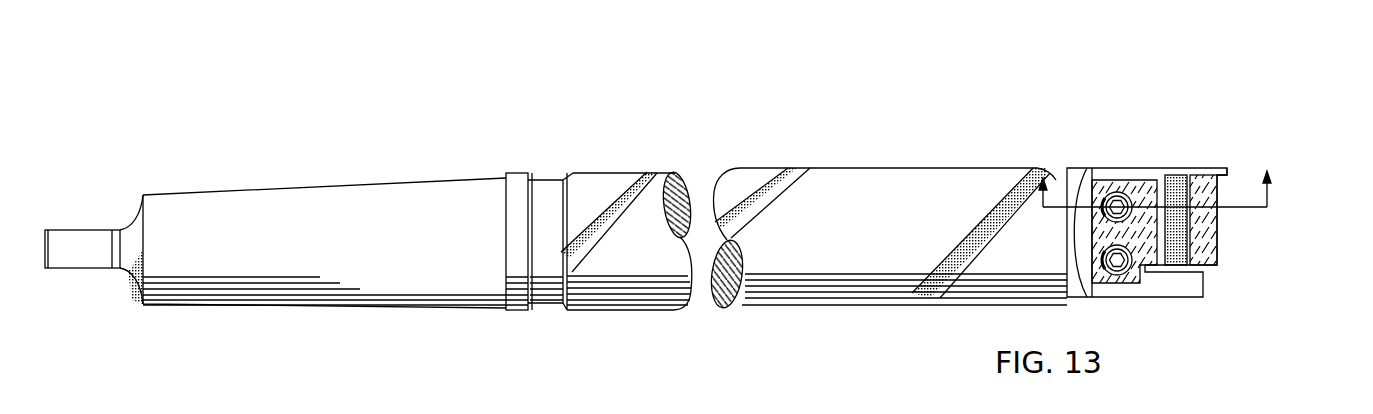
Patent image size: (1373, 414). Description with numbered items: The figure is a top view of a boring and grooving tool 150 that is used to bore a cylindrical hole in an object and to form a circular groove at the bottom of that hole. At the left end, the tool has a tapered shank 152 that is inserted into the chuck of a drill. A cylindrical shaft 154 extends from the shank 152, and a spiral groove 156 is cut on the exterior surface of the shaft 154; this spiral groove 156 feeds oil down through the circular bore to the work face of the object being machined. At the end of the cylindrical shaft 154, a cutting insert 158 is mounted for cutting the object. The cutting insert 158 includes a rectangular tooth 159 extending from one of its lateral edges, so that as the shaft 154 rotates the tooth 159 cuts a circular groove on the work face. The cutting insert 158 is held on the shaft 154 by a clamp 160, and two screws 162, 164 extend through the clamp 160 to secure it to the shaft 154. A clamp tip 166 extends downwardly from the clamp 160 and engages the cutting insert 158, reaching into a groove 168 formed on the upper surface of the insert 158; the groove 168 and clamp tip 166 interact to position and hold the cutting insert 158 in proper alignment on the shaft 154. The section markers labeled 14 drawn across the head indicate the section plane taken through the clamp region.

The boring and grooving tool 150 is at (1060, 78).
The tapered shank 152 is at (422, 200).
The cylindrical shaft 154 is at (865, 183).
The spiral groove 156 is at (772, 205).
The cutting insert 158 is at (1208, 188).
The rectangular tooth 159 is at (1227, 170).
The clamp 160 is at (1105, 187).
The screw 162 is at (1123, 192).
The screw 164 is at (1120, 275).
The clamp tip 166 is at (1180, 185).
The groove 168 is at (1200, 183).
The section line 14- 14 is at (1155, 204).